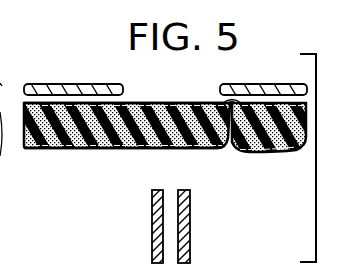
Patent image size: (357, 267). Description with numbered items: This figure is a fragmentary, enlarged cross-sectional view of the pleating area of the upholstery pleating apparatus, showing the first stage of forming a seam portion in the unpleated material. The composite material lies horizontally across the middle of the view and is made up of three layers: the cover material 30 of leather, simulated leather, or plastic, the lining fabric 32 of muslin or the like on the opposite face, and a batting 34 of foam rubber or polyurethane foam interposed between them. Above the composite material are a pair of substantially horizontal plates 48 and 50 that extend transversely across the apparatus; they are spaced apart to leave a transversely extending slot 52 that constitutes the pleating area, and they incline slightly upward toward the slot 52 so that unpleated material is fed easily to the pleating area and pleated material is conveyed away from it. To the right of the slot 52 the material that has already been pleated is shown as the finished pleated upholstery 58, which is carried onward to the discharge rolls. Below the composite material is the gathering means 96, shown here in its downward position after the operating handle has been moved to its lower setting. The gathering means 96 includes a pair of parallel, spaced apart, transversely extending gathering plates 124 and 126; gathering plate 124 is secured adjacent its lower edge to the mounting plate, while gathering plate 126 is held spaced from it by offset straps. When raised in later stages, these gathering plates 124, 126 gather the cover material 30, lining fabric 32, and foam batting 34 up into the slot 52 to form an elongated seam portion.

The cover material 30 is at (105, 150).
The lining fabric 32 is at (140, 104).
The batting 34 is at (72, 149).
The plate 48 is at (75, 84).
The plate 50 is at (258, 84).
The slot 52 is at (225, 98).
The pleated upholstery 58 is at (280, 149).
The gathering means 96 is at (170, 220).
The gathering plate 124 is at (153, 238).
The gathering plate 126 is at (190, 227).